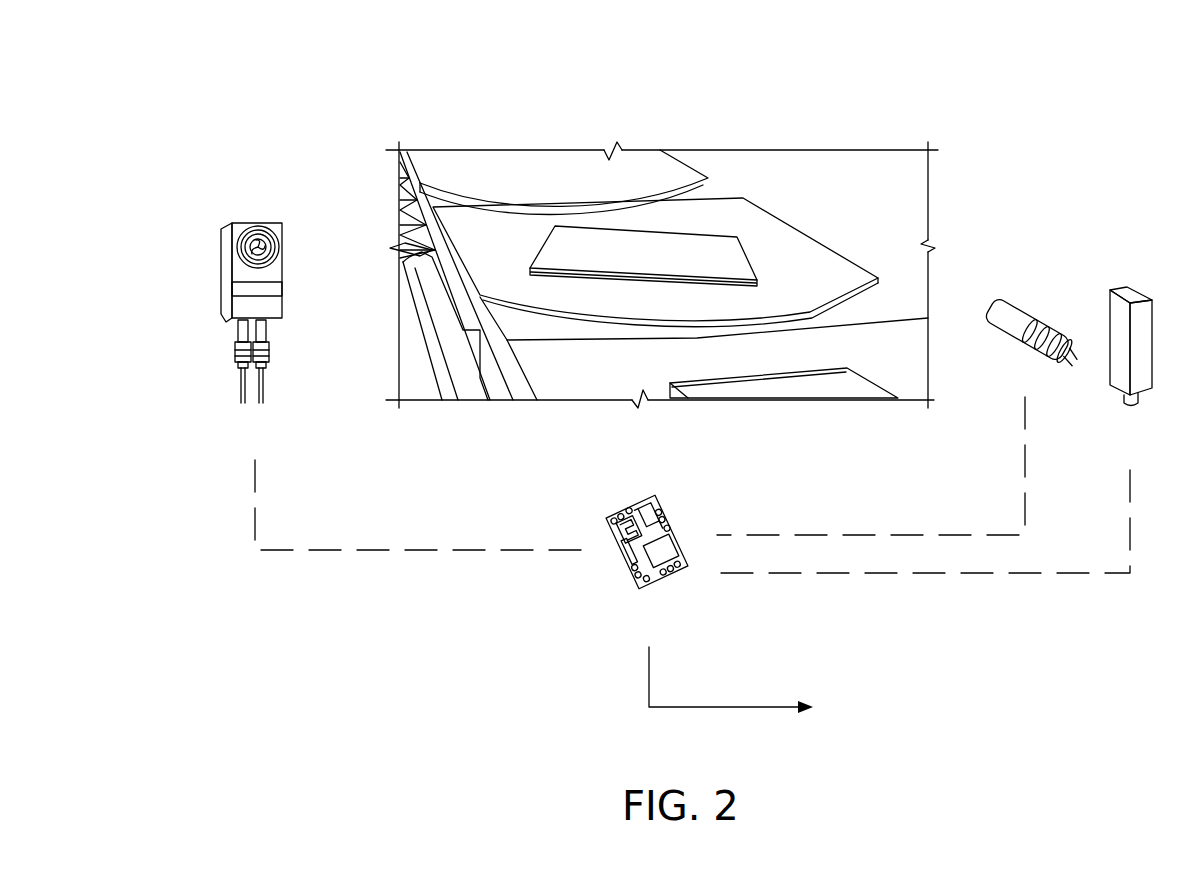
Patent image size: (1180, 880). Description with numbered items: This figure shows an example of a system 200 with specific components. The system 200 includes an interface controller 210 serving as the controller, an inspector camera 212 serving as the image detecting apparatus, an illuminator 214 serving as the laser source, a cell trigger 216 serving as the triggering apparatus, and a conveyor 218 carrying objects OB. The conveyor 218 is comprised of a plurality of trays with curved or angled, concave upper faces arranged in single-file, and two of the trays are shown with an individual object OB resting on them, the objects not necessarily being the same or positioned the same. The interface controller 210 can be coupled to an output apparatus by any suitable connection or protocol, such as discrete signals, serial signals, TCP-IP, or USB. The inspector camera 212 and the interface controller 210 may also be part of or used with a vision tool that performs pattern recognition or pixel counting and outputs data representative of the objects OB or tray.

The system 200 is at (972, 130).
The interface controller 210 is at (633, 500).
The inspector camera 212 is at (232, 222).
The illuminator 214 is at (1008, 308).
The cell trigger 216 is at (1135, 300).
The conveyor 218 is at (574, 160).
The object OB is at (692, 247).